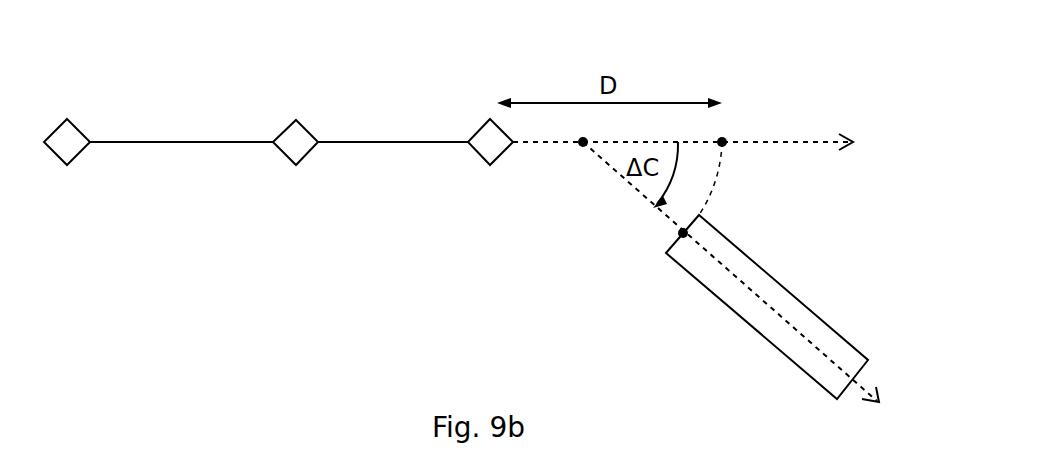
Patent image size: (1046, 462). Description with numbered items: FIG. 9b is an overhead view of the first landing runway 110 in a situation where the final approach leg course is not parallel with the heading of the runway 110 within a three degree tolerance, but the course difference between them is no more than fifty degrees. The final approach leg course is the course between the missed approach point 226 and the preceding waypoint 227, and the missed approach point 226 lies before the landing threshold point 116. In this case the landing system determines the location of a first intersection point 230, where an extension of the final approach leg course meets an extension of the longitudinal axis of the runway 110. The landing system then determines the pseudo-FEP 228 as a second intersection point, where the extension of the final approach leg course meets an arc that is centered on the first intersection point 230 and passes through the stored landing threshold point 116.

The preceding waypoint 227 is at (296, 120).
The missed approach point 226 is at (490, 119).
The pseudo-FEP 228 is at (724, 139).
The first intersection point 230 is at (580, 146).
The landing threshold point 116 is at (680, 235).
The runway 110 is at (750, 328).